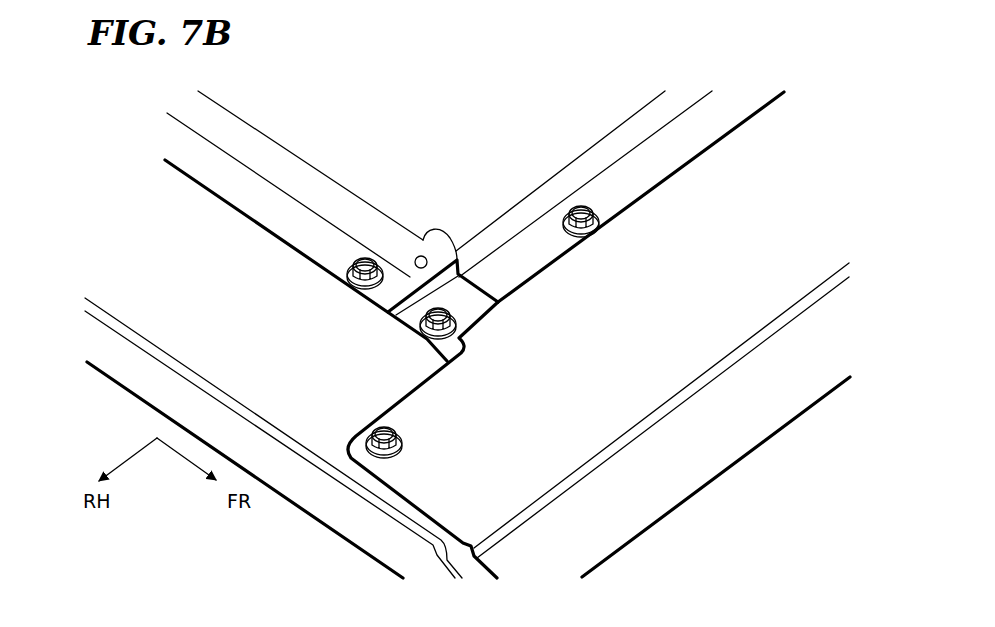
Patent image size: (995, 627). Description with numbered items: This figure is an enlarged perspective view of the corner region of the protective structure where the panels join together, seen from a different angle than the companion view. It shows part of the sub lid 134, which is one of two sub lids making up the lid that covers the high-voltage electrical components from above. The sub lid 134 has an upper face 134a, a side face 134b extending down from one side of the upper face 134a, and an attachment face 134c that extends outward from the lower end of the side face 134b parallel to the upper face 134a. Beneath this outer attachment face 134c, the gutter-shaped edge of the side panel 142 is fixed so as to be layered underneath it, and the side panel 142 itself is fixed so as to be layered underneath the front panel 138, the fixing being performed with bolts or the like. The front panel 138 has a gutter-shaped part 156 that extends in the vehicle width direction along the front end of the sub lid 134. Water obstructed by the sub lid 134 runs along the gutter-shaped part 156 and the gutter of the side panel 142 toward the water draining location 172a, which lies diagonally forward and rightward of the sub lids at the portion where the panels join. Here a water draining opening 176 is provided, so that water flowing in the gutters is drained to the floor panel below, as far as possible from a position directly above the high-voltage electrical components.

The sub lid 134 is at (474, 208).
The upper face 134a is at (423, 160).
The side face 134b is at (548, 195).
The attachment face 134c is at (632, 168).
The side panel 142 is at (171, 206).
The water draining opening 176 is at (412, 272).
The water draining location 172a is at (470, 266).
The gutter-shaped part 156 is at (470, 312).
The front panel 138 is at (662, 524).